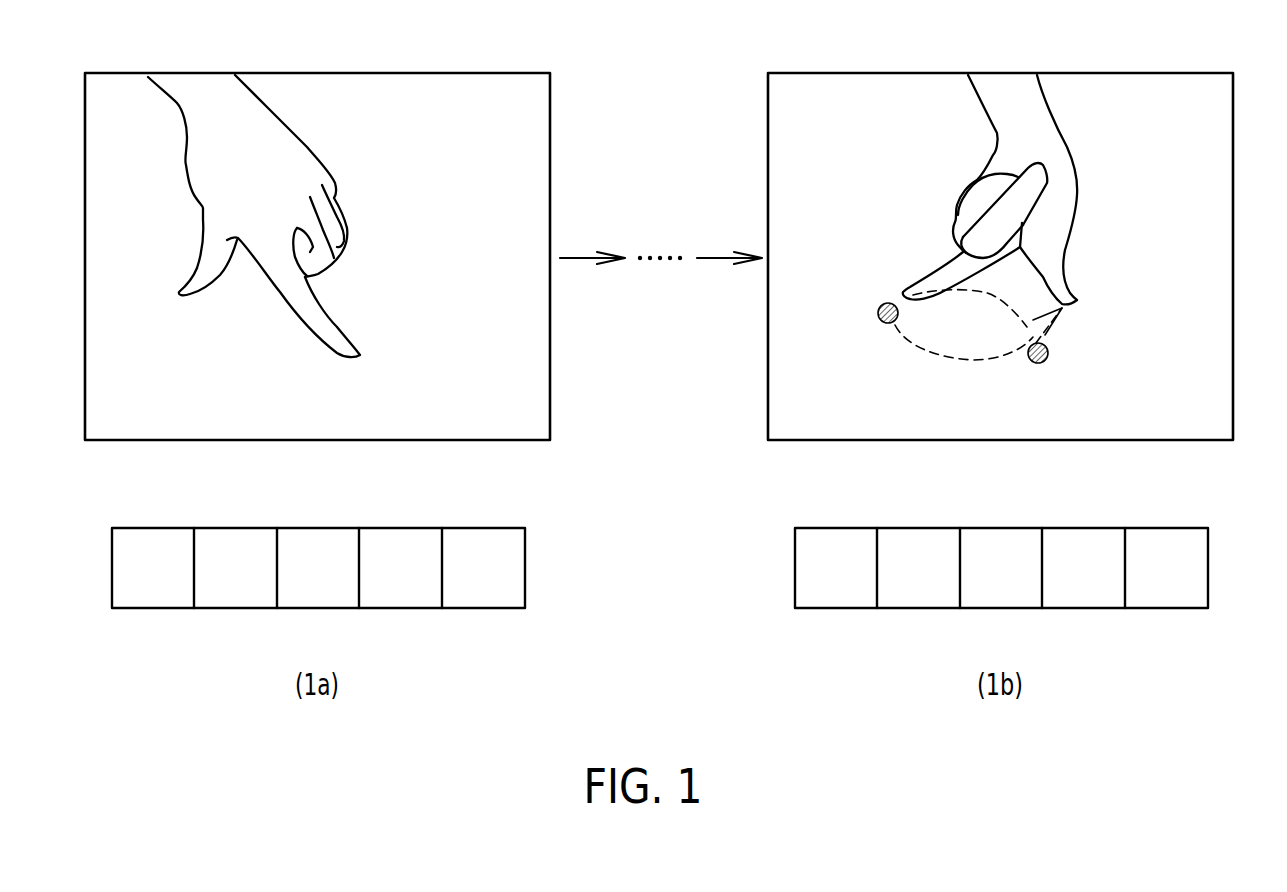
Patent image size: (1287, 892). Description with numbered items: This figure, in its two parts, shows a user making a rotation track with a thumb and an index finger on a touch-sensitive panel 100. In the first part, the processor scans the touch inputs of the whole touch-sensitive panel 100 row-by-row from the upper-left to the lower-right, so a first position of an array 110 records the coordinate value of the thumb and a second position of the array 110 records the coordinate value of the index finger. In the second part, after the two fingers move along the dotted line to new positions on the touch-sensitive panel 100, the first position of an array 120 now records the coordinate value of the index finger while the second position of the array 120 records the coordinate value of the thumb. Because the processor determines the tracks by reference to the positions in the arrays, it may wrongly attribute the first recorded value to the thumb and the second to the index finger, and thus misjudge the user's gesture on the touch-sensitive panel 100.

The touch-sensitive panel 100 is at (317, 73).
The array 110 is at (317, 528).
The array 120 is at (1007, 528).